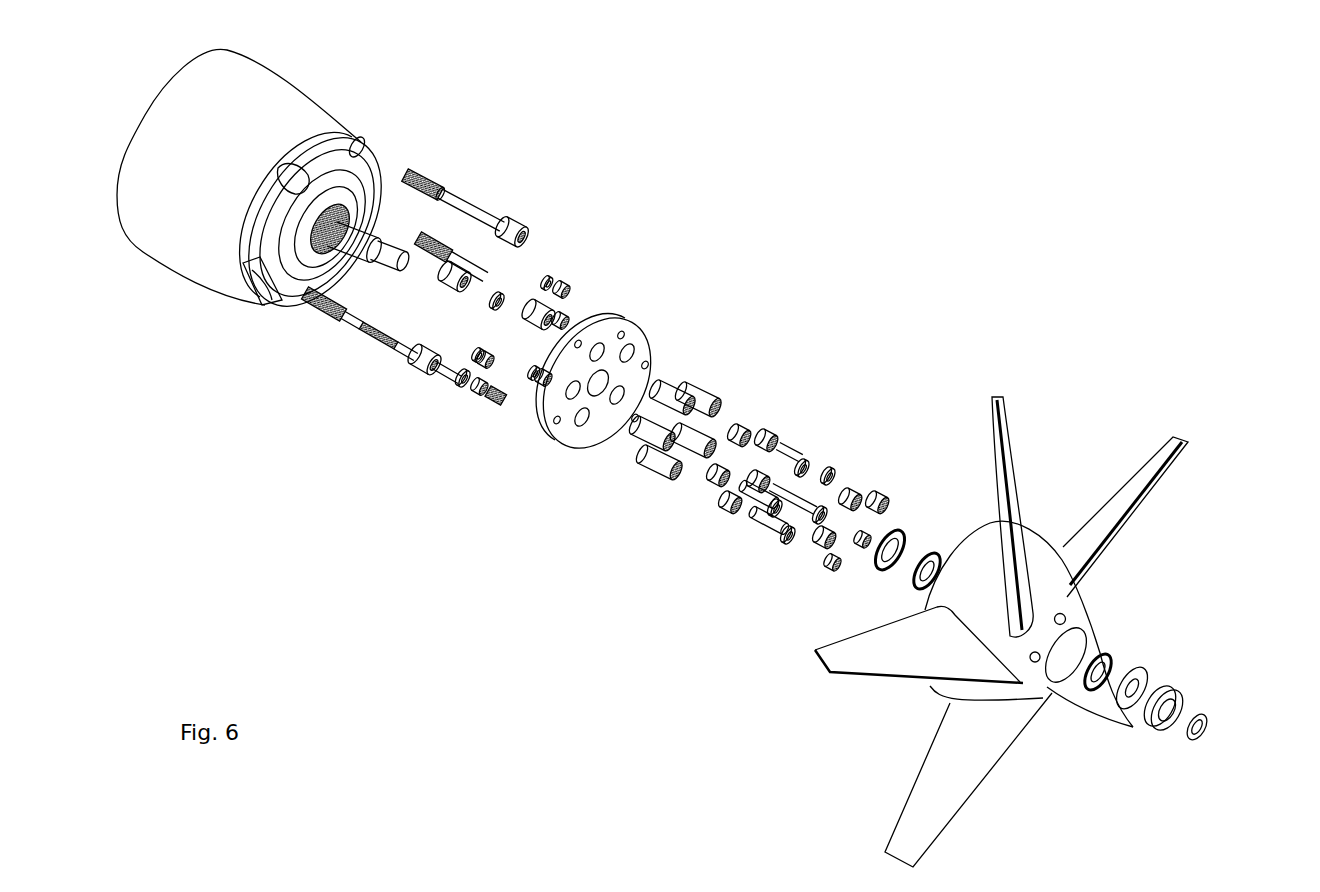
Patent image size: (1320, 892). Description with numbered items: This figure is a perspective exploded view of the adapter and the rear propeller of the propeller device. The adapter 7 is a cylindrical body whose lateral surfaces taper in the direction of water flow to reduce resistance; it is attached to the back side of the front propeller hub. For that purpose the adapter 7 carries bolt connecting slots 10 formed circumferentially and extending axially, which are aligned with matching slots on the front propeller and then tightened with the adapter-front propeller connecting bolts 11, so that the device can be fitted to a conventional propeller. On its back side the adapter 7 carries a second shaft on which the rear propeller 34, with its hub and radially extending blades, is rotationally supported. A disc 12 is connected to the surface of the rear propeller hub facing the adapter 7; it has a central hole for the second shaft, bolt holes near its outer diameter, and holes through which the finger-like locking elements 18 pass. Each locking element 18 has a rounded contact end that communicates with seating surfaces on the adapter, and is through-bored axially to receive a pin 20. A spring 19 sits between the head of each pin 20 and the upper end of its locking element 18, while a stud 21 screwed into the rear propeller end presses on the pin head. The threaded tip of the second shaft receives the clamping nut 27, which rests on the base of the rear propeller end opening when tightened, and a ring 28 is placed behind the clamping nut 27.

The adapter 7 is at (280, 100).
The bolt connecting slots 10 is at (260, 275).
The adapter-front propeller connecting bolts 11 is at (488, 212).
The disc 12 is at (560, 420).
The locking elements 18 is at (670, 390).
The spring 19 is at (748, 432).
The pin 20 is at (763, 527).
The stud 21 is at (883, 493).
The rear propeller 34 is at (1050, 487).
The clamping nut 27 is at (1148, 733).
The ring 28 is at (1208, 724).